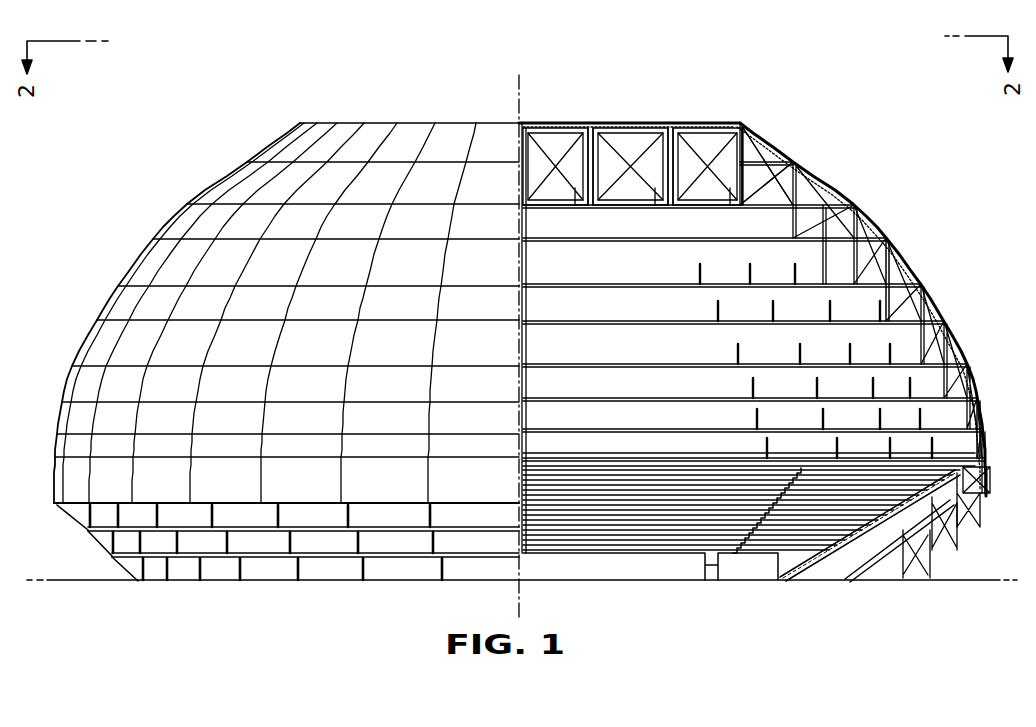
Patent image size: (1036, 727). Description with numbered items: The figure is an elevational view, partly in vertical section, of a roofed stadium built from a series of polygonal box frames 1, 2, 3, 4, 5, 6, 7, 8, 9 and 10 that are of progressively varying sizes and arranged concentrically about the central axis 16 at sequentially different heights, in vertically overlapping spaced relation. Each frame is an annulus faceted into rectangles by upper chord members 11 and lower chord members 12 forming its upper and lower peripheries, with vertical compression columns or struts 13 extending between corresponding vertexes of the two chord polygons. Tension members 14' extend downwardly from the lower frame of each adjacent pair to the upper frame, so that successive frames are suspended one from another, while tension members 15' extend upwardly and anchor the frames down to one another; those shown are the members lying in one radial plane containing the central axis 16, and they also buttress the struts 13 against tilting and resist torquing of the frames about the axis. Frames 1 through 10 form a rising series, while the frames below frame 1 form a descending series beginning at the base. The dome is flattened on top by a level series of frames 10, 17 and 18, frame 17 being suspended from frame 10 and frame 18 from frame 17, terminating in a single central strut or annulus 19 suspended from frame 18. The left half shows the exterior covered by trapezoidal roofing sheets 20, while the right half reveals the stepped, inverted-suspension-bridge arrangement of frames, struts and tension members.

The polygonal box frame 1 is at (992, 477).
The polygonal box frame 2 is at (986, 441).
The polygonal box frame 3 is at (978, 414).
The polygonal box frame 4 is at (972, 380).
The polygonal box frame 5 is at (950, 339).
The polygonal box frame 6 is at (923, 305).
The polygonal box frame 7 is at (871, 298).
The polygonal box frame 8 is at (838, 257).
The polygonal box frame 9 is at (785, 203).
The polygonal box frame 10 is at (748, 140).
The upper chord members 11 is at (835, 200).
The lower chord members 12 is at (812, 285).
The vertical compression columns or struts 13 is at (858, 233).
The downwardly extending tension members 14' is at (790, 320).
The upwardly extending tension members 15' is at (858, 315).
The central axis 16 is at (519, 94).
The polygonal box frame 17 is at (683, 150).
The polygonal box frame 18 is at (606, 150).
The central strut or annulus 19 is at (531, 147).
The roofing sheets 20 is at (465, 130).